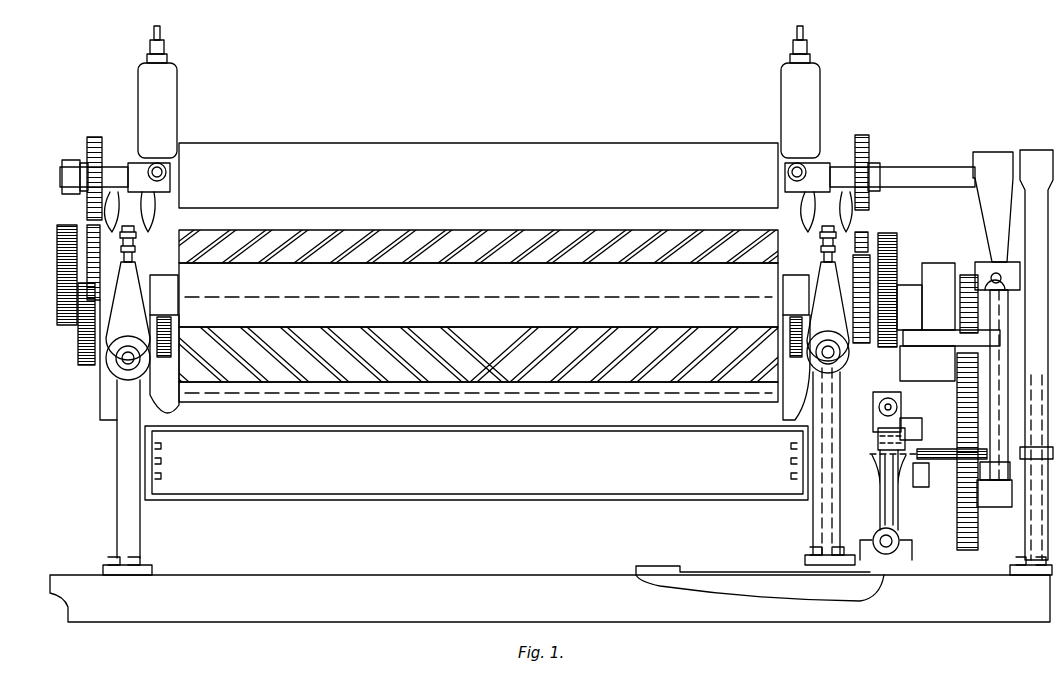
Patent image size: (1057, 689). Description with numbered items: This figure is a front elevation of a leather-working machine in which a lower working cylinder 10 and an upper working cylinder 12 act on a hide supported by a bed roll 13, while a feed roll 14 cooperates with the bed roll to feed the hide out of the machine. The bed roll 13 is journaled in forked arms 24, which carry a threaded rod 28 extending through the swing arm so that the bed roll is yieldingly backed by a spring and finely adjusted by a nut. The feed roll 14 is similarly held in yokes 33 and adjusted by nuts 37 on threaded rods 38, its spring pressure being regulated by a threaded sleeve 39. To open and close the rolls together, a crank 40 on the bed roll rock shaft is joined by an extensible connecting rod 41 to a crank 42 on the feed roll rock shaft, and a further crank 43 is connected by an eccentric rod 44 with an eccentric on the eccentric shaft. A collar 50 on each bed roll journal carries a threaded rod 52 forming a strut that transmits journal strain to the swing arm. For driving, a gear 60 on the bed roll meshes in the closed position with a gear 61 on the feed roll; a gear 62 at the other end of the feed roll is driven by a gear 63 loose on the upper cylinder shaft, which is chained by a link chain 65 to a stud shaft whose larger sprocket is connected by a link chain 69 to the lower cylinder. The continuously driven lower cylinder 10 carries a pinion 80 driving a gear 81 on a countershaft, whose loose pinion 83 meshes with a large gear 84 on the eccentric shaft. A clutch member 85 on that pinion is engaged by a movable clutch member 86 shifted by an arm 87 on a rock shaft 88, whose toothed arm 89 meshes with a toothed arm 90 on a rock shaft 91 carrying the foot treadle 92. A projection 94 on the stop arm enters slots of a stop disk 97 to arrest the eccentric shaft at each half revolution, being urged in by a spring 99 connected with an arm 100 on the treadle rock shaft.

The lower working cylinder 10 is at (545, 372).
The upper working cylinder 12 is at (496, 232).
The bed roll 13 is at (478, 295).
The feed roll 14 is at (660, 137).
The forked arms 24 is at (128, 276).
The threaded rod 28 is at (112, 380).
The yokes 33 is at (167, 172).
The nuts 37 is at (164, 44).
The threaded rods 38 is at (154, 30).
The threaded sleeve 39 is at (139, 60).
The crank 40 is at (1003, 336).
The connecting rod 41 is at (1018, 273).
The crank 42 is at (982, 211).
The crank 43 is at (985, 480).
The eccentric rod 44 is at (996, 507).
The sleeve or collar 50 is at (166, 294).
The threaded rod 52 is at (170, 326).
The gear 60 is at (860, 292).
The gear 61 is at (864, 135).
The gear 62 is at (95, 137).
The gear 63 is at (94, 228).
The link chain 65 is at (62, 312).
The link chain 69 is at (88, 366).
The pinion 80 is at (848, 346).
The gear 81 is at (866, 240).
The pinion 83 is at (968, 275).
The large gear 84 is at (975, 534).
The clutch member 85 is at (938, 263).
The movable clutch member 86 is at (892, 292).
The arm 87 is at (915, 347).
The rock shaft 88 is at (903, 409).
The toothed arm 89 is at (880, 441).
The toothed arm 90 is at (878, 486).
The rock shaft 91 is at (884, 556).
The foot treadle 92 is at (750, 570).
The projection 94 is at (911, 429).
The stop disk 97 is at (921, 487).
The spring 99 is at (945, 459).
The arm 100 is at (885, 515).